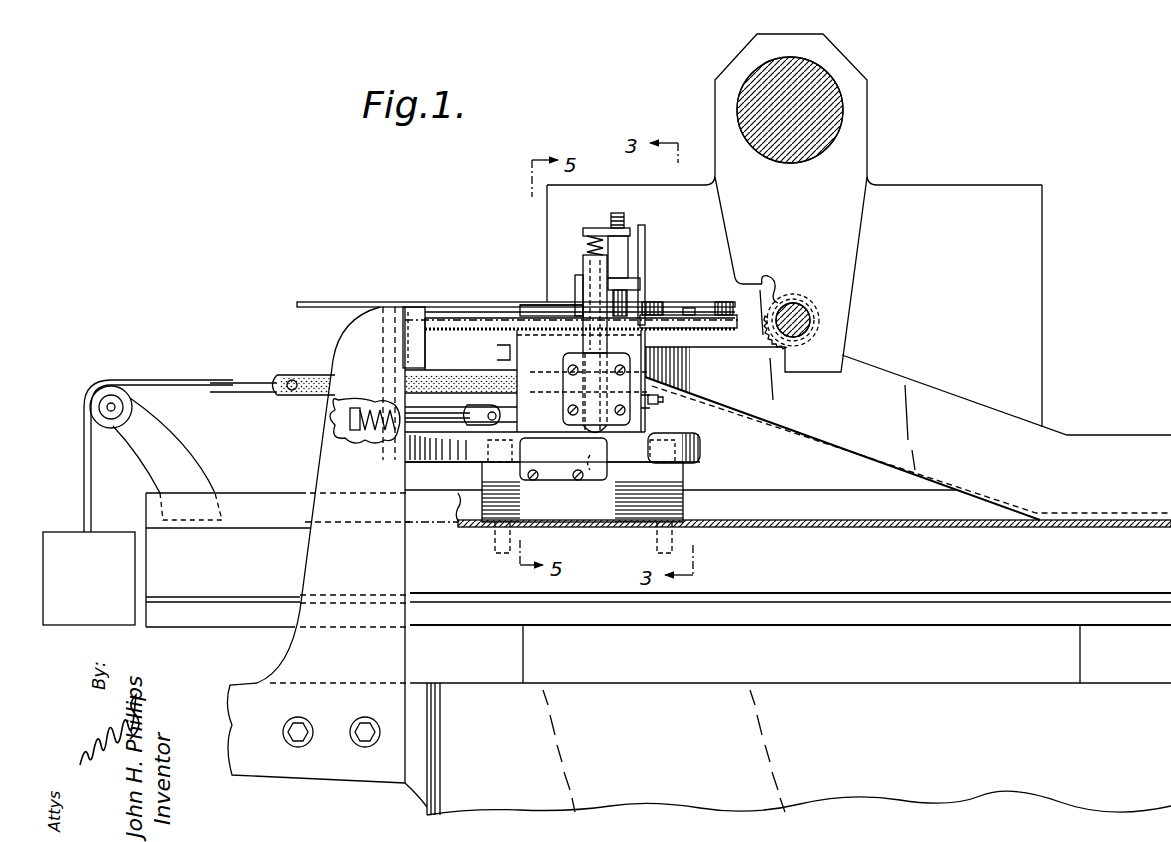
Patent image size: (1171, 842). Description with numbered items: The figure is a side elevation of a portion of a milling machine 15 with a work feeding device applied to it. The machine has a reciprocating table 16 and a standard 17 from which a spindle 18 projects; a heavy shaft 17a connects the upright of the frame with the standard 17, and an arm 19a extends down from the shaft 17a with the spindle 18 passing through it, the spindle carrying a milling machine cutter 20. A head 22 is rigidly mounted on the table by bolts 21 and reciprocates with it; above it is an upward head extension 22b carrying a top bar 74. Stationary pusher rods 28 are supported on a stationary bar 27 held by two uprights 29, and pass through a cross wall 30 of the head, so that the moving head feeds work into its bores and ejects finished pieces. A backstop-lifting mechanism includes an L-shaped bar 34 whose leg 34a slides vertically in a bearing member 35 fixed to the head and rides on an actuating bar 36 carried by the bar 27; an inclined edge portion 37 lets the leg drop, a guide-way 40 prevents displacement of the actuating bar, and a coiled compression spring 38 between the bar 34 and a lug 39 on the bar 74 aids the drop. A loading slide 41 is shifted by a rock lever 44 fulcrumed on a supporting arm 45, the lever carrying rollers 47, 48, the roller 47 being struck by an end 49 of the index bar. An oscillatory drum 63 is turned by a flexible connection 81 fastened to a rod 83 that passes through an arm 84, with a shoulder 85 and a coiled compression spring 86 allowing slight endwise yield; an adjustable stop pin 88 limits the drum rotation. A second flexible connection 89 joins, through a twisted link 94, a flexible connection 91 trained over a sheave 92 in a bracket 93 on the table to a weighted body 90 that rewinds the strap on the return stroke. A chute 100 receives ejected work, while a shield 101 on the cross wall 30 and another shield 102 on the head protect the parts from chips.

The milling machine 15 is at (1046, 224).
The reciprocating table 16 is at (1032, 563).
The standard 17 is at (904, 188).
The heavy shaft 17a is at (840, 92).
The spindle 18 is at (818, 316).
The arm 19a is at (852, 222).
The milling machine cutter 20 is at (763, 284).
The bolts 21 is at (512, 513).
The head 22 is at (643, 412).
The head extension 22b is at (640, 232).
The stationary bar 27 is at (417, 307).
The pusher rods 28 is at (452, 320).
The uprights 29 is at (382, 567).
The cross wall 30 is at (503, 339).
The L-shaped bar 34 is at (583, 265).
The leg 34a is at (592, 342).
The bearing member 35 is at (577, 388).
The actuating bar 36 is at (470, 461).
The inclined edge portion 37 is at (700, 440).
The coiled compression spring 38 is at (587, 238).
The lug 39 is at (588, 228).
The guide-way 40 is at (591, 457).
The loading slide 41 is at (538, 305).
The rock lever 44 is at (690, 308).
The supporting arm 45 is at (712, 330).
The roller 47 is at (724, 302).
The roller 48 is at (656, 302).
The end of index bar 49 is at (627, 293).
The oscillatory drum 63 is at (581, 429).
The top bar 74 is at (622, 228).
The flexible connection 81 is at (487, 426).
The rod 83 is at (437, 406).
The arm 84 is at (375, 432).
The shoulder 85 is at (340, 404).
The coiled compression spring 86 is at (356, 432).
The adjustable stop pin 88 is at (664, 400).
The second flexible connection 89 is at (313, 375).
The weighted body 90 is at (137, 565).
The flexible connection 91 is at (197, 380).
The sheave 92 is at (112, 386).
The bracket 93 is at (194, 457).
The twisted link 94 is at (245, 383).
The chute 100 is at (828, 447).
The shield 101 is at (320, 302).
The shield 102 is at (645, 252).